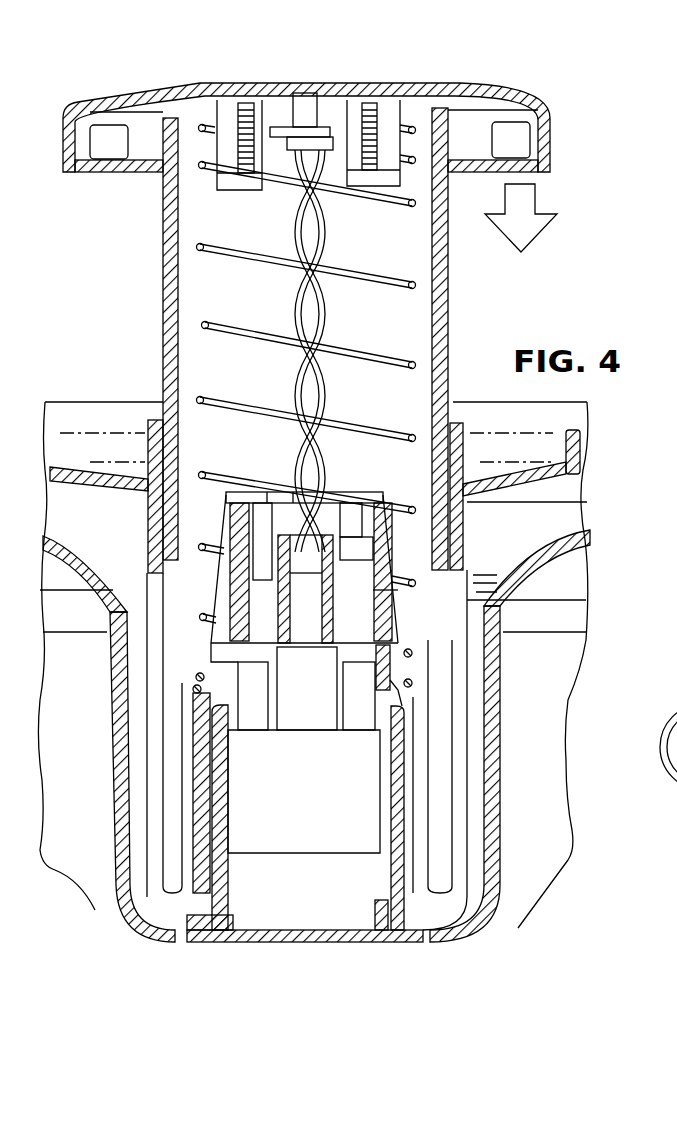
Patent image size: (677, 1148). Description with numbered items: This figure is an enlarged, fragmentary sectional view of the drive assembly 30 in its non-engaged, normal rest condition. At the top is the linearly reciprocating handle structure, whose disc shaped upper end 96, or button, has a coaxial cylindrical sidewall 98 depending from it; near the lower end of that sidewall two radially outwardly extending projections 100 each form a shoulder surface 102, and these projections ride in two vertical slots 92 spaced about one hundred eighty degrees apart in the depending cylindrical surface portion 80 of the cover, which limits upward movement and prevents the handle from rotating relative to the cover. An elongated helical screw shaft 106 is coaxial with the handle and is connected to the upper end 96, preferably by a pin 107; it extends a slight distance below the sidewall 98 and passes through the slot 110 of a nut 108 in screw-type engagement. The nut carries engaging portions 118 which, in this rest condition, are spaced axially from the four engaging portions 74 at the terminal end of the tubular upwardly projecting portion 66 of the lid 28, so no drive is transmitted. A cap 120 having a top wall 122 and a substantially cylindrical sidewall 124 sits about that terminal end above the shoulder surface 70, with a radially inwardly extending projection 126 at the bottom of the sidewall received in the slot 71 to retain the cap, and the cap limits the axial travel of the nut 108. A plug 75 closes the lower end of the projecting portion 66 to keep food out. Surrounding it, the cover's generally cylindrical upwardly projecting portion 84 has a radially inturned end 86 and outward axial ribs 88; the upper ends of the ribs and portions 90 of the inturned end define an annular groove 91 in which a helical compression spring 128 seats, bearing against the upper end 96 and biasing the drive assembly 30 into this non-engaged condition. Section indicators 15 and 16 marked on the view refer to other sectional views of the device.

The section line 15- 15 is at (48, 137).
The section line 16- 16 is at (187, 948).
The lid 28 is at (118, 792).
The drive assembly 30 is at (417, 322).
The upwardly projecting portion 66 is at (230, 907).
The shoulder surface 70 is at (211, 632).
The slot 71 is at (413, 654).
The engaging portions 74 is at (256, 532).
The plug 75 is at (346, 928).
The cylindrical surface portion 80 is at (147, 505).
The upwardly projecting portion 84 is at (413, 748).
The radially inturned end 86 is at (230, 733).
The axial ribs 88 is at (203, 672).
The portions of the end 90 is at (228, 642).
The annular groove 91 is at (413, 686).
The vertical slots 92 is at (463, 574).
The disc shaped upper end 96 is at (523, 92).
The cylindrical sidewall 98 is at (443, 376).
The radially outwardly extending projections 100 is at (157, 556).
The shoulder surface 102 is at (147, 535).
The helical screw shaft 106 is at (313, 318).
The pin 107 is at (226, 183).
The nut 108 is at (308, 632).
The slot 110 is at (297, 490).
The engaging portion 118 is at (316, 480).
The cap 120 is at (393, 612).
The top wall 122 is at (340, 492).
The cylindrical sidewall 124 is at (392, 485).
The radially inwardly extending projection 126 is at (382, 638).
The helical compression spring 128 is at (383, 270).